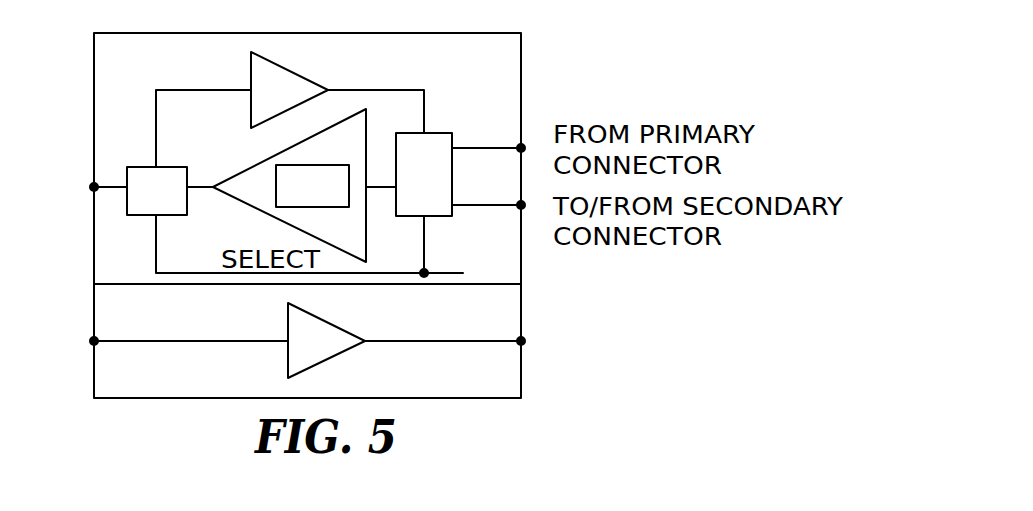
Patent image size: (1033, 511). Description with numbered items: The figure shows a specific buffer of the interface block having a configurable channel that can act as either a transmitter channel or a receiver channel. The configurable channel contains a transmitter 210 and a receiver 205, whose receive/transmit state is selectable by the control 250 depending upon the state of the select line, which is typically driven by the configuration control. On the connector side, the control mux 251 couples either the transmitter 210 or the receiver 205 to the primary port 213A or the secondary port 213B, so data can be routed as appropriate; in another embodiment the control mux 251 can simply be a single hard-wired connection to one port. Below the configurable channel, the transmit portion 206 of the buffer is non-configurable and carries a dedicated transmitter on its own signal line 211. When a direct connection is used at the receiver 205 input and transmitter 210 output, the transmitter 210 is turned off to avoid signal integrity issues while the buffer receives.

The control 250 is at (107, 165).
The transmitter 210 is at (298, 101).
The receiver 205 is at (335, 200).
The control mux 251 is at (453, 149).
The primary port 213A is at (548, 95).
The secondary port 213B is at (548, 249).
The transmit portion 206 is at (333, 351).
The signal line 211 is at (490, 365).